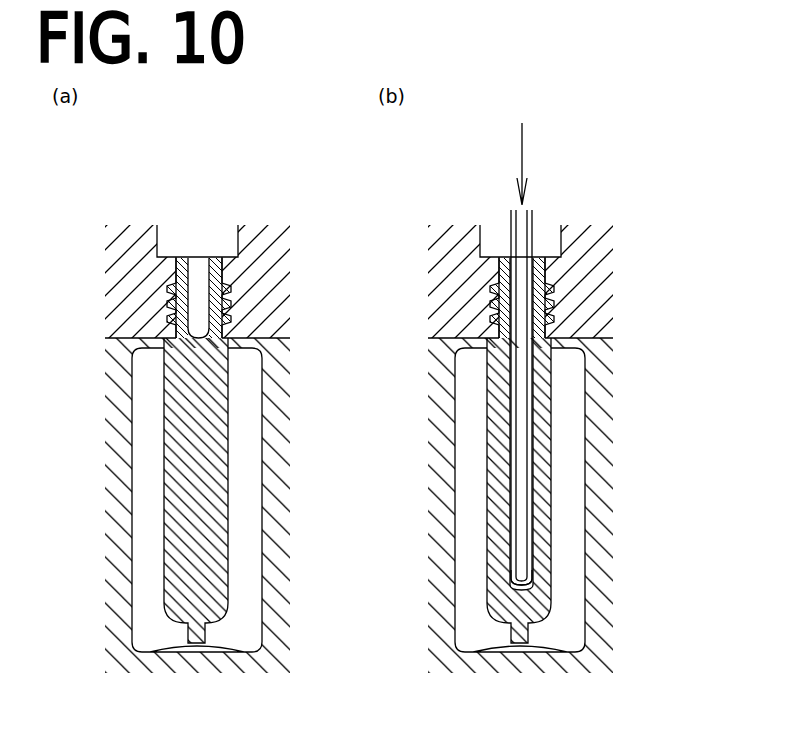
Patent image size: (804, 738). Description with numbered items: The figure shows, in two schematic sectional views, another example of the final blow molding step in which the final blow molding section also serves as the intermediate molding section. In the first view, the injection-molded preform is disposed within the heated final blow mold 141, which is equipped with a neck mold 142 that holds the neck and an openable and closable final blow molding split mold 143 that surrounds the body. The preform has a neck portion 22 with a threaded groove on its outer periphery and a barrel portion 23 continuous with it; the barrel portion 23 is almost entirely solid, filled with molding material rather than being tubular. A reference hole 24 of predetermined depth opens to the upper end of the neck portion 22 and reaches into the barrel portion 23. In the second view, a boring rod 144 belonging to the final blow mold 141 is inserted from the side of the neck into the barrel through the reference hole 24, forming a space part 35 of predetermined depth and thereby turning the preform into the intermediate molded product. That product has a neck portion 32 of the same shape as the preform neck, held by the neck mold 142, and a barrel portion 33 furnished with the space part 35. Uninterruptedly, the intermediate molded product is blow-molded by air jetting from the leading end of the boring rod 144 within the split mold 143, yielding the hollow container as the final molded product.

The final blow mold 141 is at (253, 160).
The neck mold 142 is at (264, 288).
The final blow molding split mold 143 is at (273, 530).
The boring rod 144 is at (461, 450).
The neck portion 22 is at (168, 293).
The barrel portion 23 is at (187, 490).
The reference hole 24 is at (176, 270).
The neck portion 32 is at (468, 292).
The barrel portion 33 is at (609, 397).
The space part 35 is at (452, 556).